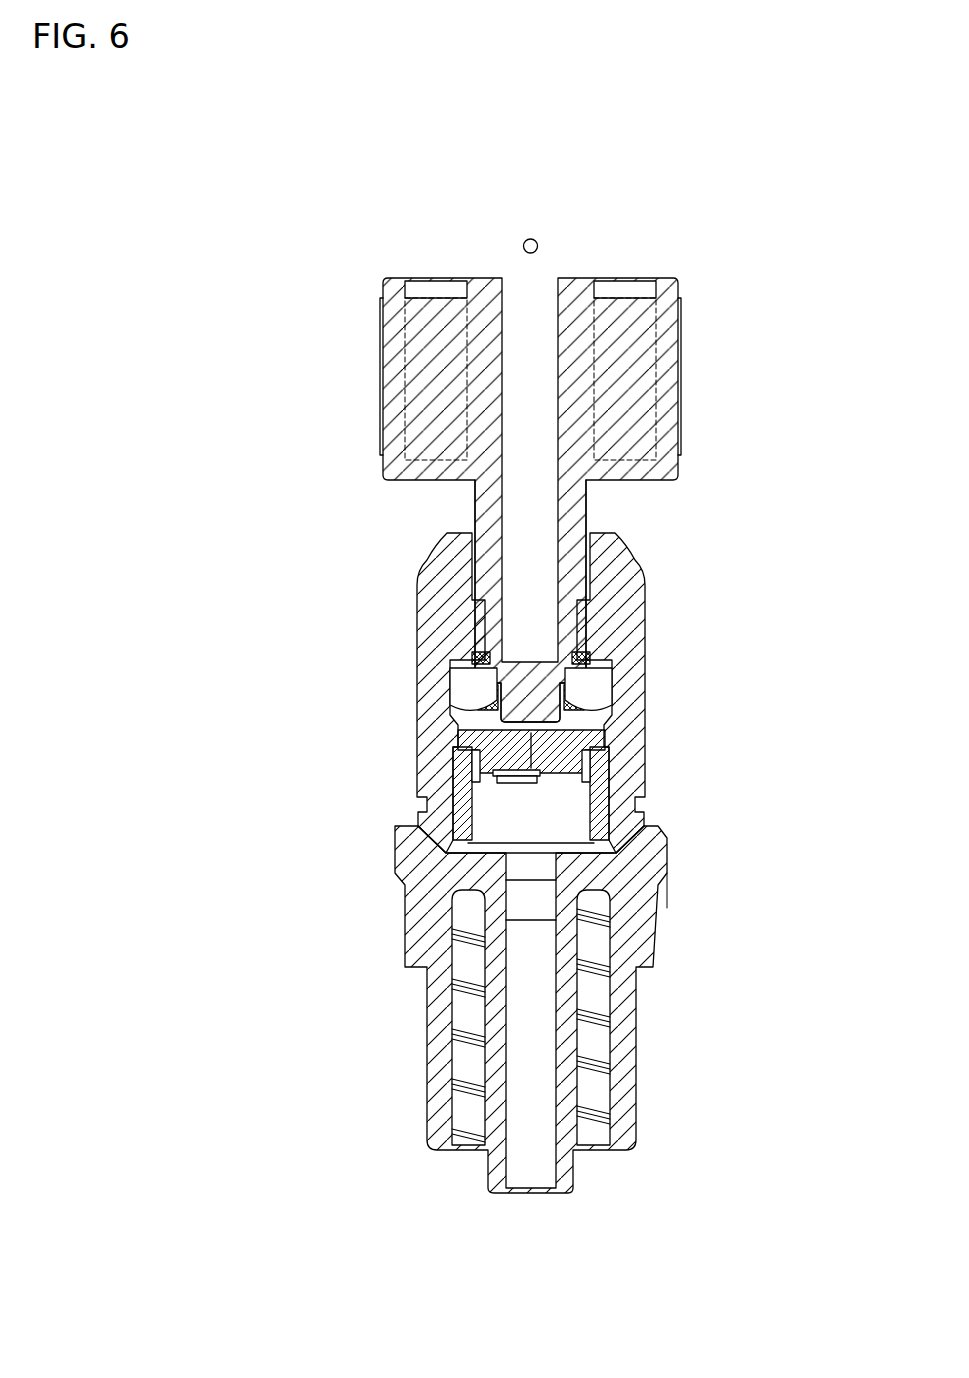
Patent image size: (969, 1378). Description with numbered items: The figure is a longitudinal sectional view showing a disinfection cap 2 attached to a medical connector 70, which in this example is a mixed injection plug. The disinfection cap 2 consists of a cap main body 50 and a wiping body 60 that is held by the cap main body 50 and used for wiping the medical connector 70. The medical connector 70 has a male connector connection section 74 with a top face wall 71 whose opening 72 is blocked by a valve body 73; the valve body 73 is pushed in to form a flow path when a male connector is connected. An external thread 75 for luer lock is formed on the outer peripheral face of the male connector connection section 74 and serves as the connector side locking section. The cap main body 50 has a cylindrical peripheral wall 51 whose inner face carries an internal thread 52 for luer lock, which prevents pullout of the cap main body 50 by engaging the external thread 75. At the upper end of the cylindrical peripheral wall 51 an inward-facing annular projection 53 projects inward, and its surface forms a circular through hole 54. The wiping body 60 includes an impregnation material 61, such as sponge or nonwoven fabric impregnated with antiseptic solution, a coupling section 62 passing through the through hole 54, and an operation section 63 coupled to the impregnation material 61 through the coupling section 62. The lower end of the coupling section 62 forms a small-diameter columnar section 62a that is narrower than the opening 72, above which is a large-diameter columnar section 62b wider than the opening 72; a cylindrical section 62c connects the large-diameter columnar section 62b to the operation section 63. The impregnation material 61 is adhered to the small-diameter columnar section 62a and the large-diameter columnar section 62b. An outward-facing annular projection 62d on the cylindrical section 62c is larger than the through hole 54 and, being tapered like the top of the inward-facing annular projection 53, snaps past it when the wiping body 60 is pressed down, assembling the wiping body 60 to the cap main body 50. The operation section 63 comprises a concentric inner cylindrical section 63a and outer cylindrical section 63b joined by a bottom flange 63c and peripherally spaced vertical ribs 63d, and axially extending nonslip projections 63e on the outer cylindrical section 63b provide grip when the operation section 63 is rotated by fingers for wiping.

The disinfection cap 2 is at (778, 617).
The cap main body 50 is at (417, 608).
The cylindrical peripheral wall 51 is at (417, 652).
The internal thread 52 is at (452, 793).
The inward-facing annular projection 53 is at (468, 538).
The circular through hole 54 is at (473, 542).
The wiping body 60 is at (380, 373).
The impregnation material 61 is at (580, 702).
The coupling section 62 is at (617, 632).
The small-diameter columnar section 62a is at (527, 697).
The large-diameter columnar section 62b is at (610, 678).
The cylindrical section 62c is at (587, 517).
The outward-facing annular projection 62d is at (585, 587).
The operation section 63 is at (663, 275).
The inner cylindrical section 63a is at (573, 410).
The outer cylindrical section 63b is at (665, 422).
The bottom flange 63c is at (623, 475).
The vertical ribs 63d is at (622, 362).
The nonslip projections 63e is at (680, 383).
The medical connector 70 is at (763, 887).
The top face wall 71 is at (458, 735).
The opening 72 is at (513, 777).
The valve body 73 is at (547, 774).
The male connector connection section 74 is at (455, 708).
The external thread 75 is at (452, 777).